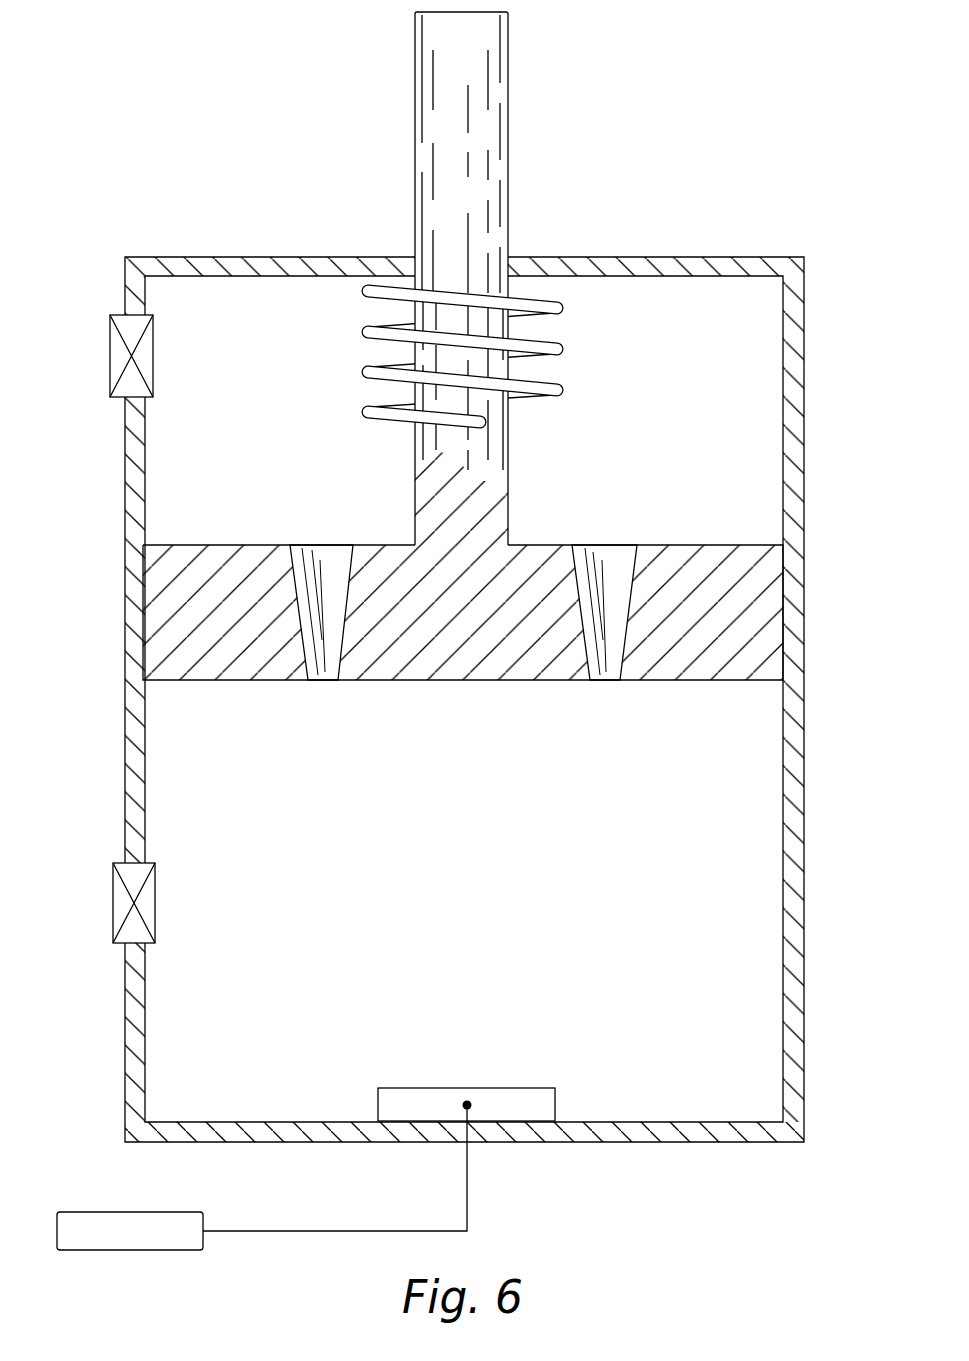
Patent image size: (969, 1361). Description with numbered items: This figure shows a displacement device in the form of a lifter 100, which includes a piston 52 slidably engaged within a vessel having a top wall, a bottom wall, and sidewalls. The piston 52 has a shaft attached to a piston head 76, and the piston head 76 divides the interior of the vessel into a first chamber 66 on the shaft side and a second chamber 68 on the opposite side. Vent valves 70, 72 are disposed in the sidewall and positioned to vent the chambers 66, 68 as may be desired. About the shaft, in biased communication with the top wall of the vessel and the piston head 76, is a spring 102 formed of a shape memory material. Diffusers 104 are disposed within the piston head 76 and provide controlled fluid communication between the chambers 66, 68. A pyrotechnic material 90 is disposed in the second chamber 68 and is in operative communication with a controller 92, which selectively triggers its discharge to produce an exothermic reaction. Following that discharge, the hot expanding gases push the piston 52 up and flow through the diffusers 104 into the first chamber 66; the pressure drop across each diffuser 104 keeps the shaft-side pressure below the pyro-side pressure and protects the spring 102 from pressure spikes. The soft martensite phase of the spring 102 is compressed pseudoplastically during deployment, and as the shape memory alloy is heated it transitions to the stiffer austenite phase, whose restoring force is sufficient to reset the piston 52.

The lifter 100 is at (174, 68).
The piston 52 is at (536, 84).
The vent valve 70 is at (113, 364).
The vent valve 72 is at (116, 910).
The first chamber 66 is at (277, 485).
The second chamber 68 is at (482, 898).
The piston head 76 is at (463, 602).
The spring 102 is at (448, 277).
The diffuser 104 is at (325, 681).
The pyrotechnic material 90 is at (512, 1088).
The controller 92 is at (117, 1212).